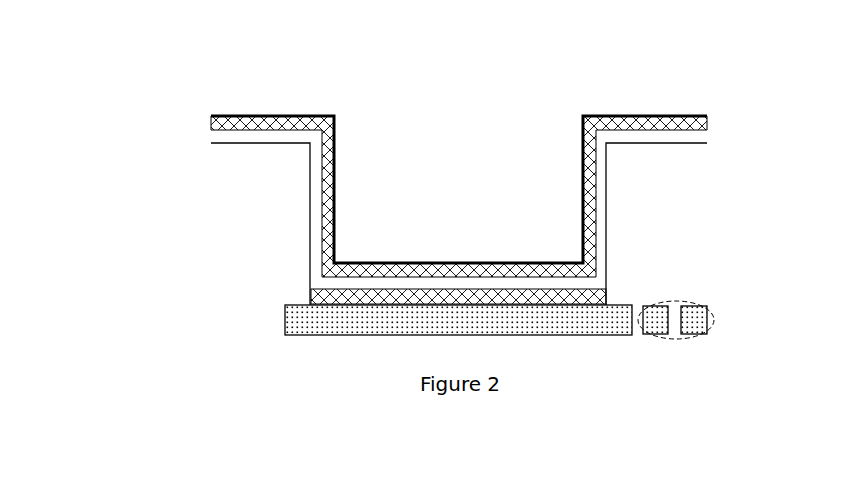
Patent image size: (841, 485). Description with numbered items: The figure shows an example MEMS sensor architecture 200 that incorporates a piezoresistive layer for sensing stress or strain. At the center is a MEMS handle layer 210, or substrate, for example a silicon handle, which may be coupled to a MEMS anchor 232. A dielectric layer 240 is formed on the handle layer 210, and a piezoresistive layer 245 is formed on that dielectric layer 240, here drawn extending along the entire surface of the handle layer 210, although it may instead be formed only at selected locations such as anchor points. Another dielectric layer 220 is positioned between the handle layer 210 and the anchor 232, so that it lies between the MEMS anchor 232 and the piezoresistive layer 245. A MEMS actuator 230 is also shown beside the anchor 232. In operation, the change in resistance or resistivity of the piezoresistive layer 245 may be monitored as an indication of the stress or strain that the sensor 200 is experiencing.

The MEMS sensor architecture 200 is at (150, 65).
The MEMS handle layer 210 is at (458, 216).
The dielectric layer 220 is at (608, 295).
The MEMS actuator 230 is at (700, 302).
The MEMS anchor 232 is at (285, 322).
The dielectric layer 240 is at (322, 202).
The piezoresistive layer 245 is at (310, 268).